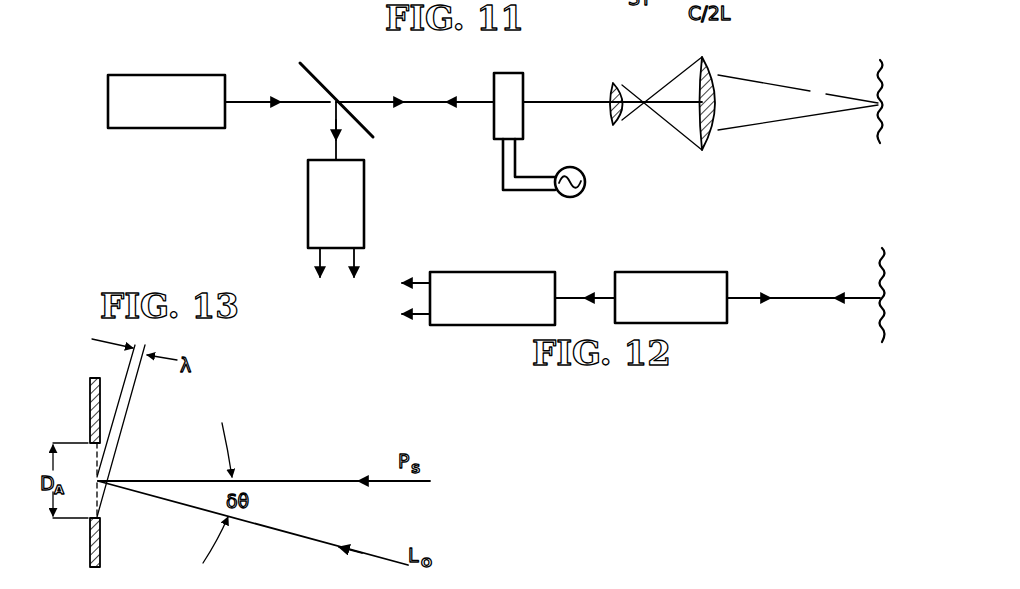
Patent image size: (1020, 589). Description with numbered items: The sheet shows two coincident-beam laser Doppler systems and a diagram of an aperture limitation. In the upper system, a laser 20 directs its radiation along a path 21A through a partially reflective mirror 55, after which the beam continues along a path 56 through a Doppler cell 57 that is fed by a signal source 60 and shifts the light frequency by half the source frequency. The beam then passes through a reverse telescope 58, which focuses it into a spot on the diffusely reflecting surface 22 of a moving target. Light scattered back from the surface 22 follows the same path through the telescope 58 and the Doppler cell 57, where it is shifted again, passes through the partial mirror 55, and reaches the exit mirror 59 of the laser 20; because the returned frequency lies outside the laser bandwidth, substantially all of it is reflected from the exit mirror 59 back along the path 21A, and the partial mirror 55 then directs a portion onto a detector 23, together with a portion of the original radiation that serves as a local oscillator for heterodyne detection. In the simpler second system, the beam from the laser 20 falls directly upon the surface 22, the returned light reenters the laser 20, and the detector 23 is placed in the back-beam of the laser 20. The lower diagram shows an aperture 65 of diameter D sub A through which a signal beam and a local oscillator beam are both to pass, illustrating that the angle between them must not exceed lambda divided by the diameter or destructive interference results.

In FIG. 11, the laser 20 is at (170, 75).
In FIG. 12, the laser 20 is at (672, 272).
In FIG. 11, the path 21A is at (288, 104).
In FIG. 11, the surface 22 is at (878, 76).
In FIG. 12, the surface 22 is at (878, 275).
In FIG. 11, the detector 23 is at (365, 209).
In FIG. 12, the detector 23 is at (487, 272).
In FIG. 11, the partially reflective mirror 55 is at (327, 87).
In FIG. 11, the path 56 is at (425, 100).
In FIG. 11, the Doppler cell 57 is at (523, 90).
In FIG. 11, the reverse telescope 58 is at (648, 100).
In FIG. 11, the exit mirror 59 is at (226, 88).
In FIG. 11, the source 60 is at (585, 176).
In FIG. 13, the aperture 65 is at (90, 395).